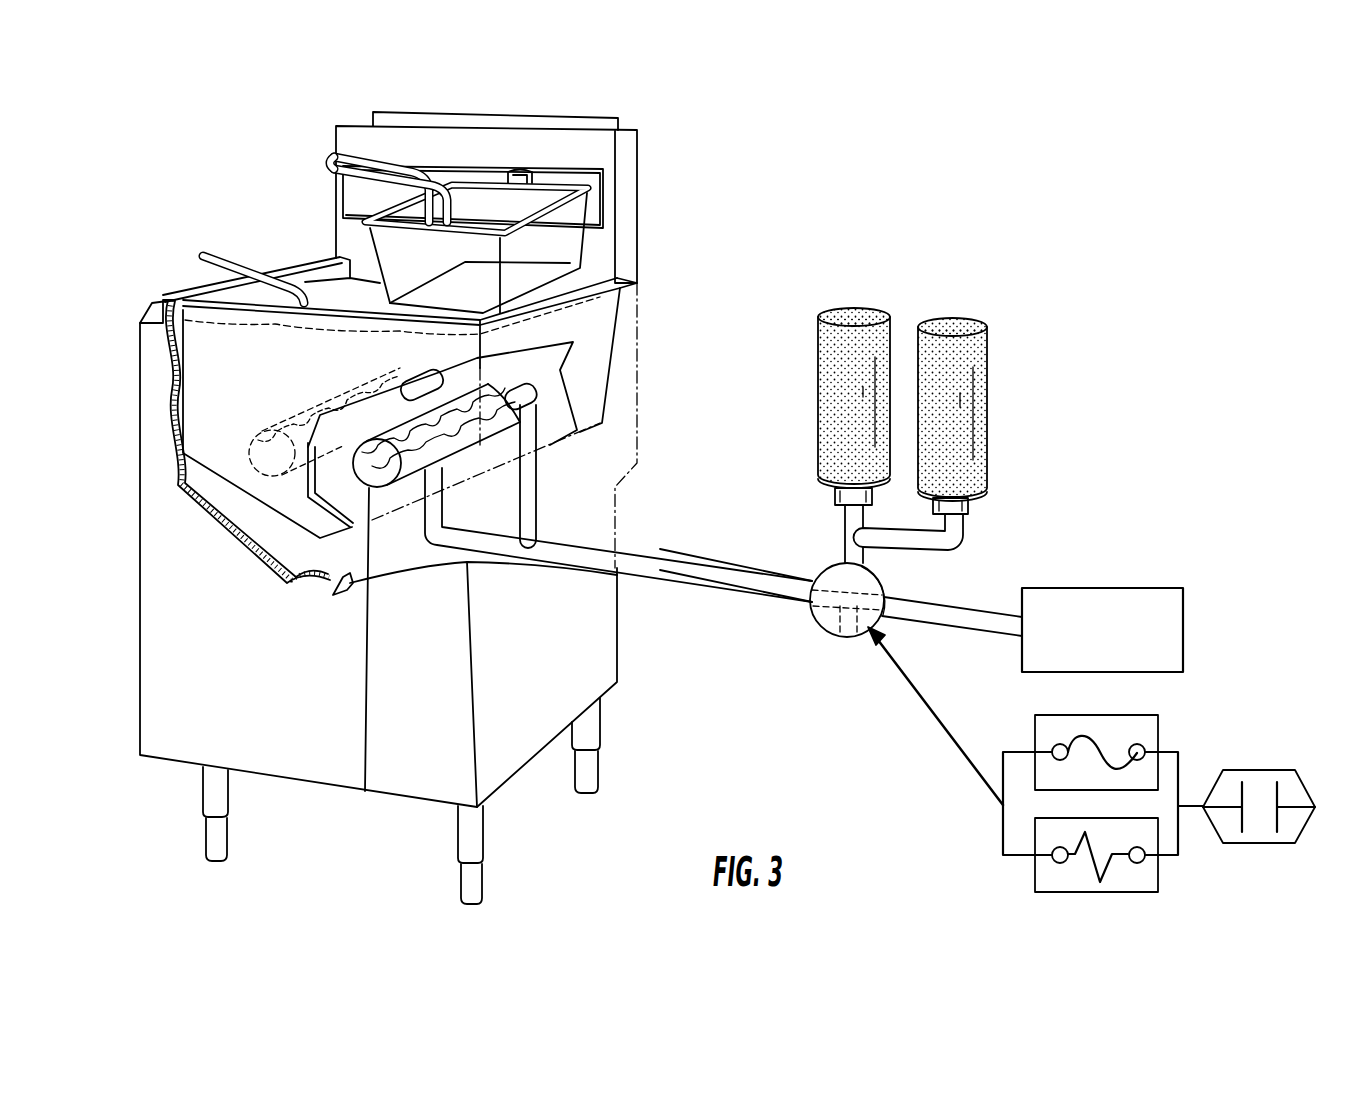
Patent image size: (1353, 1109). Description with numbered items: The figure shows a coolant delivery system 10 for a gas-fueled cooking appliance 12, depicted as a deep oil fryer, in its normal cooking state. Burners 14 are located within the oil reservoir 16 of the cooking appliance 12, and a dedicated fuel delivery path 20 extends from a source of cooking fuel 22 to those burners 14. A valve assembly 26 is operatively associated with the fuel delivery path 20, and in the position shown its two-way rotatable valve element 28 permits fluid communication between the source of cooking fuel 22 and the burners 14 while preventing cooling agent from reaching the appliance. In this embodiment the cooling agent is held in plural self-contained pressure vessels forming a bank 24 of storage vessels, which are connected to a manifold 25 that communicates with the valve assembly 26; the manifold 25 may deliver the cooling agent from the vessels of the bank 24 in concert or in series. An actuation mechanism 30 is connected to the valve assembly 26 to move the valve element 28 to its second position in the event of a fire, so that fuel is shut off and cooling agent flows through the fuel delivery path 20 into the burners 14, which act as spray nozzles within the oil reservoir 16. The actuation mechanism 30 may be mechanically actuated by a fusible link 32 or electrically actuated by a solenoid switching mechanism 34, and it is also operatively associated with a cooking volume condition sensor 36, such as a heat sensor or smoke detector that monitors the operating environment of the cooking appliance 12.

The coolant delivery system 10 is at (757, 270).
The cooking appliance 12 is at (593, 627).
The burner 14 is at (270, 483).
The oil reservoir 16 is at (237, 482).
The fuel delivery path 20 is at (723, 568).
The source of cooking fuel 22 is at (1142, 588).
The bank of storage vessels 24 is at (960, 318).
The manifold 25 is at (963, 553).
The valve assembly 26 is at (817, 627).
The rotatable valve element 28 is at (850, 590).
The actuation mechanism 30 is at (1215, 713).
The fusible link 32 is at (1078, 714).
The solenoid switching mechanism 34 is at (1088, 892).
The cooking volume condition sensor 36 is at (1263, 770).